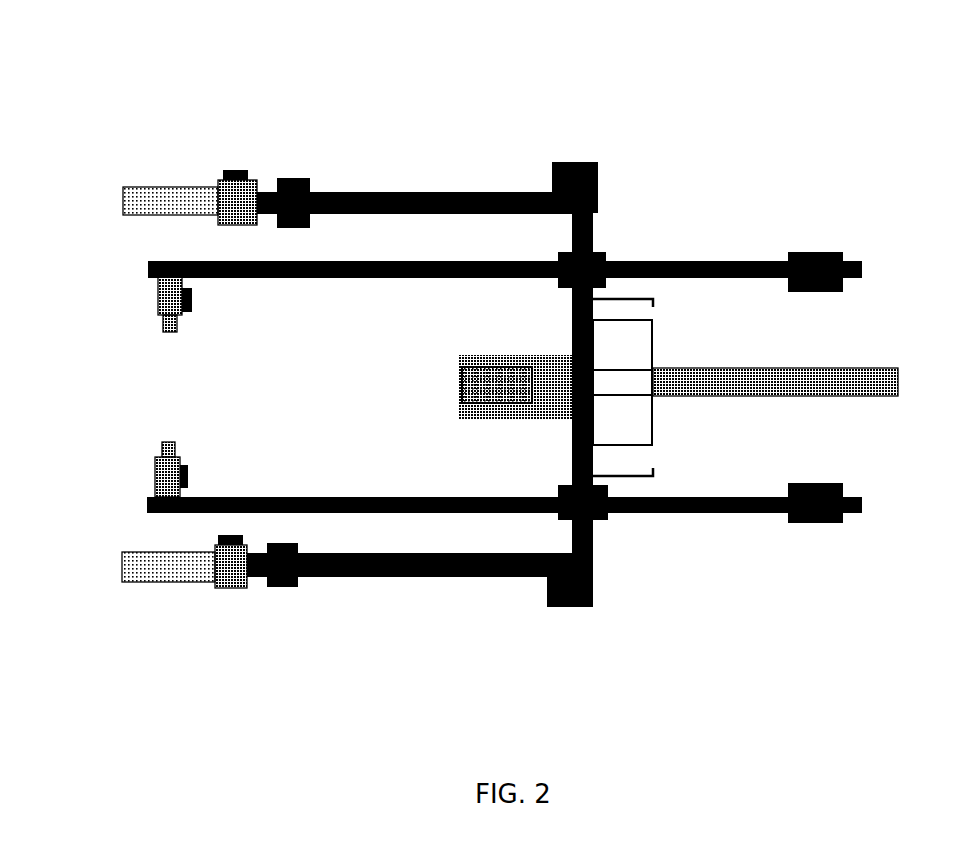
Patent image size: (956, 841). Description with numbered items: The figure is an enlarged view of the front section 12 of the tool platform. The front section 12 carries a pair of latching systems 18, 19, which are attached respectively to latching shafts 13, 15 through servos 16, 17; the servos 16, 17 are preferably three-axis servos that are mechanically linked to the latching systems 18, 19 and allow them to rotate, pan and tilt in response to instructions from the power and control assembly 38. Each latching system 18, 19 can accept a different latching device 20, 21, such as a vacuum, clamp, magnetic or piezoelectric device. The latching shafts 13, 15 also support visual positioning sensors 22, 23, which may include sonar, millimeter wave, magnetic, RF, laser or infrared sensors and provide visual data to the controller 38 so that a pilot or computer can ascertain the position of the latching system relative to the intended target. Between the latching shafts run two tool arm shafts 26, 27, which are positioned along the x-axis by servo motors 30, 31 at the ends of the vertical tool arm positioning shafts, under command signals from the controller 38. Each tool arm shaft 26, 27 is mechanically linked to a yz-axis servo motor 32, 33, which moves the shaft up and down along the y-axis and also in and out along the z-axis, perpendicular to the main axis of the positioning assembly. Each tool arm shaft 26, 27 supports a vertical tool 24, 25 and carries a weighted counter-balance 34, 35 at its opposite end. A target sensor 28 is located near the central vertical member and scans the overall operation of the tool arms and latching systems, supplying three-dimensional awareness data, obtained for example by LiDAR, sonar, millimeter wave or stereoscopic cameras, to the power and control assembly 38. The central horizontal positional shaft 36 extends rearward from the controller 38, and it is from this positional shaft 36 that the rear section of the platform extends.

The front section 12 is at (752, 48).
The latching shaft 13 is at (398, 190).
The latching shaft 15 is at (400, 580).
The servo 16 is at (296, 178).
The servo 17 is at (296, 590).
The latching system 18 is at (225, 220).
The latching system 19 is at (232, 590).
The latching device 20 is at (146, 192).
The latching device 21 is at (135, 568).
The visual positioning sensor 22 is at (237, 170).
The visual positioning sensor 23 is at (228, 536).
The vertical tool 24 is at (160, 312).
The vertical tool 25 is at (167, 444).
The tool arm shaft 26 is at (312, 280).
The tool arm shaft 27 is at (283, 497).
The target sensor 28 is at (490, 358).
The servo motor 30 is at (598, 165).
The servo motor 31 is at (568, 608).
The yz-axis servo motor 32 is at (606, 252).
The yz-axis servo motor 33 is at (598, 522).
The weighted counter-balance 34 is at (810, 255).
The weighted counter-balance 35 is at (812, 522).
The central horizontal positional shaft 36 is at (820, 372).
The power and control assembly 38 is at (653, 348).